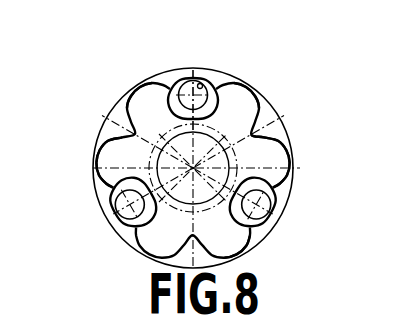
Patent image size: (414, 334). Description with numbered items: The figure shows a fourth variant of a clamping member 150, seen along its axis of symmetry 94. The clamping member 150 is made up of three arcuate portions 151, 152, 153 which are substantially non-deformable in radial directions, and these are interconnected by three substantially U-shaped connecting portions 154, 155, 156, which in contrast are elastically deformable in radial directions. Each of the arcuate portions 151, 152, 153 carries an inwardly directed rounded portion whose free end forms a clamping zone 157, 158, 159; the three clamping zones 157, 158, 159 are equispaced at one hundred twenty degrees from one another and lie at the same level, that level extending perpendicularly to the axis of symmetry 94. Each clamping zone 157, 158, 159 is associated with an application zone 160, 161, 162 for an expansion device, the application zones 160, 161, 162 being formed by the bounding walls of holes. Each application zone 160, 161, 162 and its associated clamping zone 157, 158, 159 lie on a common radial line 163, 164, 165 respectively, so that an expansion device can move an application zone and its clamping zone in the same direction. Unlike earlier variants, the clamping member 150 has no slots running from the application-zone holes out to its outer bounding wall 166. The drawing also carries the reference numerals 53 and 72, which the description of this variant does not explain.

The clamping member 150 is at (292, 101).
The arcuate portion 151 is at (288, 196).
The arcuate portion 152 is at (127, 237).
The arcuate portion 153 is at (178, 82).
The U-shaped connecting portion 154 is at (238, 256).
The U-shaped connecting portion 155 is at (98, 148).
The U-shaped connecting portion 156 is at (272, 133).
The clamping zone 157 is at (300, 171).
The clamping zone 158 is at (142, 243).
The clamping zone 159 is at (218, 90).
The application zone 160 is at (274, 229).
The application zone 161 is at (110, 202).
The application zone 162 is at (207, 78).
The radial line 163 is at (284, 224).
The radial line 164 is at (102, 224).
The radial line 165 is at (193, 58).
The outer bounding wall 166 is at (96, 172).
The pitch circle 53 is at (180, 143).
The upper left lobe wall 72 is at (127, 100).
The axis of symmetry 94 is at (252, 100).